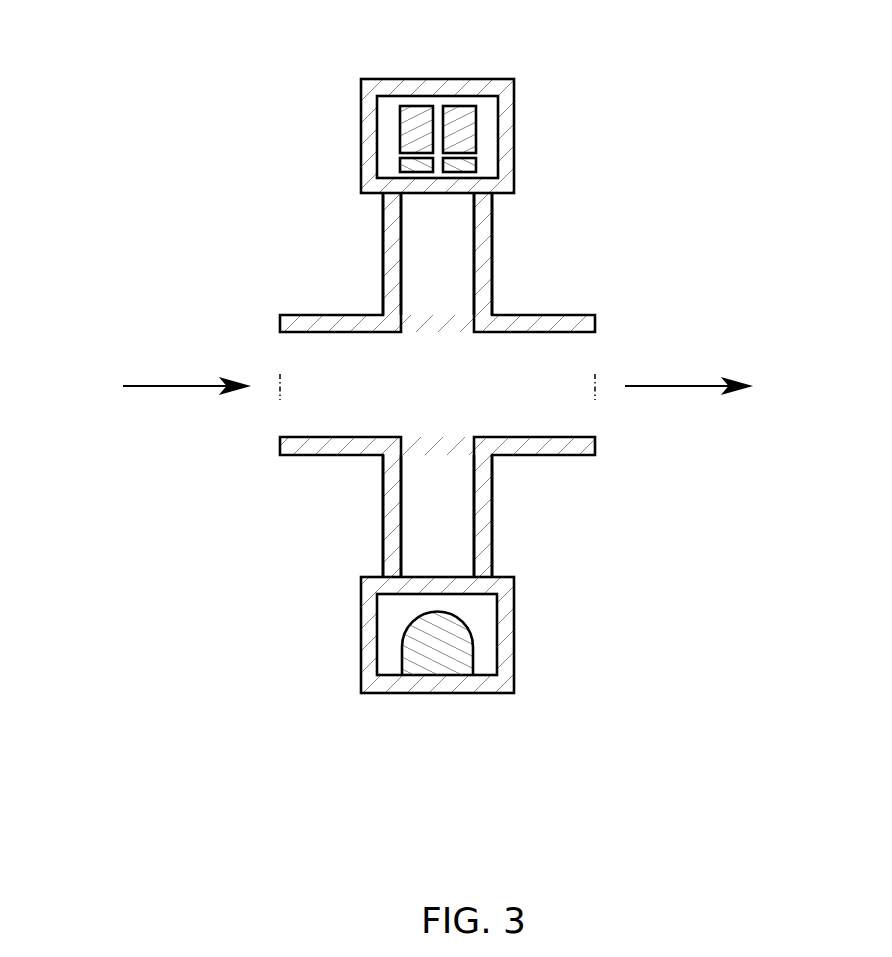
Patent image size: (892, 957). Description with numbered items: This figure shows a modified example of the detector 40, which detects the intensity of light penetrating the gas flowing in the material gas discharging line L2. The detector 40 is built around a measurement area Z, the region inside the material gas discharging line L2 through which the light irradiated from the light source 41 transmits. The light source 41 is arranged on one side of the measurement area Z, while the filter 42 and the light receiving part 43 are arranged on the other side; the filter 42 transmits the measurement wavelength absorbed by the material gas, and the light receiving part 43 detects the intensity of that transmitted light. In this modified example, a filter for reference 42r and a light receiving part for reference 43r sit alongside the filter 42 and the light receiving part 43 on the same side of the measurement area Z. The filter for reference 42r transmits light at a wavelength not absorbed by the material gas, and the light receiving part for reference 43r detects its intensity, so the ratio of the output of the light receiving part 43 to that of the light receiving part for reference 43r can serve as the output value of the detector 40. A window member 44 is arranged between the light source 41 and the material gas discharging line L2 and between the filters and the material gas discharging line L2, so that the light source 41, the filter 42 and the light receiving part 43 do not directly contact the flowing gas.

The detector 40 is at (514, 79).
The light source 41 is at (473, 656).
The filter 42 is at (400, 162).
The filter for reference 42r is at (476, 162).
The light receiving part 43 is at (400, 113).
The light receiving part for reference 43r is at (476, 113).
The window member 44 is at (481, 193).
The material gas discharging line L2 is at (580, 358).
The measurement area Z is at (438, 388).